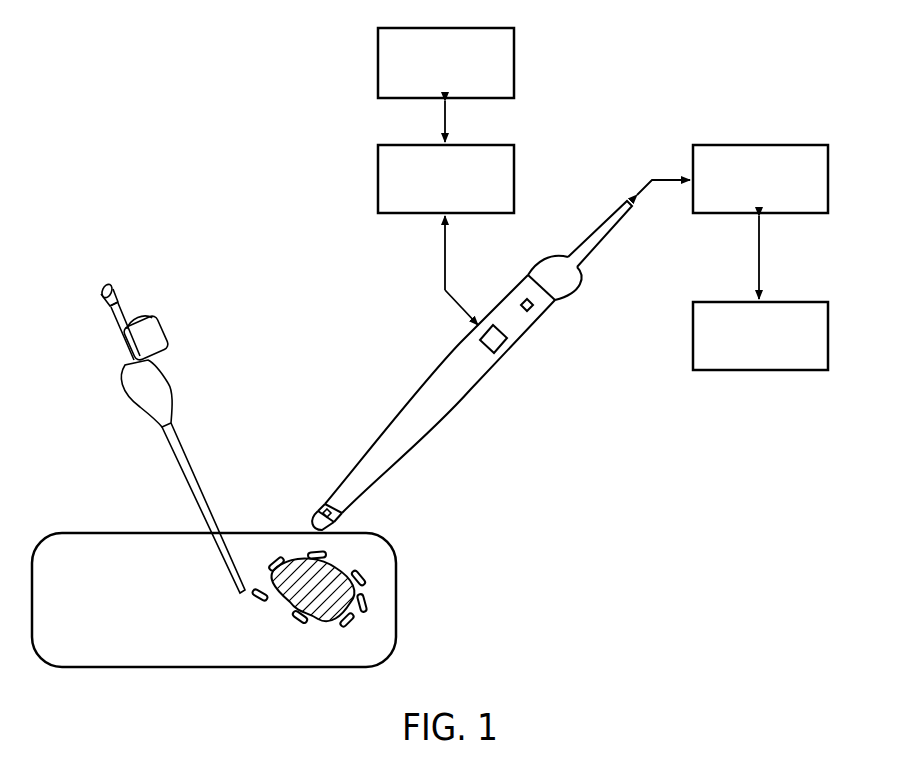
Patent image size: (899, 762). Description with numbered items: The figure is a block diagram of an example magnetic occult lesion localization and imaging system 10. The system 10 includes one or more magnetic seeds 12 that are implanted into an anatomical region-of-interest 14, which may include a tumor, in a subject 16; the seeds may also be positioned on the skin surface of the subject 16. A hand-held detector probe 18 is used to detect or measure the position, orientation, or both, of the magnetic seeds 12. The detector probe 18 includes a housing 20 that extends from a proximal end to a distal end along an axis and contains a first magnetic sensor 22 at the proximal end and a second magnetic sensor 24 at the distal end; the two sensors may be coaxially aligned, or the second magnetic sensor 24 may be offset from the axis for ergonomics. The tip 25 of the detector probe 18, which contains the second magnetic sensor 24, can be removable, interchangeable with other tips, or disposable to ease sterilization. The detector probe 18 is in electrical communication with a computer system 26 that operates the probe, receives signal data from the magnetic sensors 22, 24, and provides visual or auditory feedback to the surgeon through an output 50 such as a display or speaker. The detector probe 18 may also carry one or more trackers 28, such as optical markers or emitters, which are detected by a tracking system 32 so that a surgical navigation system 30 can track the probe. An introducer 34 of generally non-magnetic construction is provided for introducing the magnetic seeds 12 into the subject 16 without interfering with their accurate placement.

The magnetic occult lesion localization and imaging system 10 is at (178, 82).
The magnetic seeds 12 is at (371, 597).
The anatomical region-of-interest 14 is at (321, 621).
The subject 16 is at (165, 533).
The detector probe 18 is at (419, 356).
The housing 20 is at (400, 400).
The first magnetic sensor 22 is at (529, 314).
The second magnetic sensor 24 is at (319, 506).
The tip 25 is at (342, 520).
The computer system 26 is at (759, 145).
The trackers 28 is at (498, 349).
The surgical navigation system 30 is at (515, 62).
The tracking system 32 is at (515, 178).
The introducer 34 is at (164, 311).
The output 50 is at (736, 302).